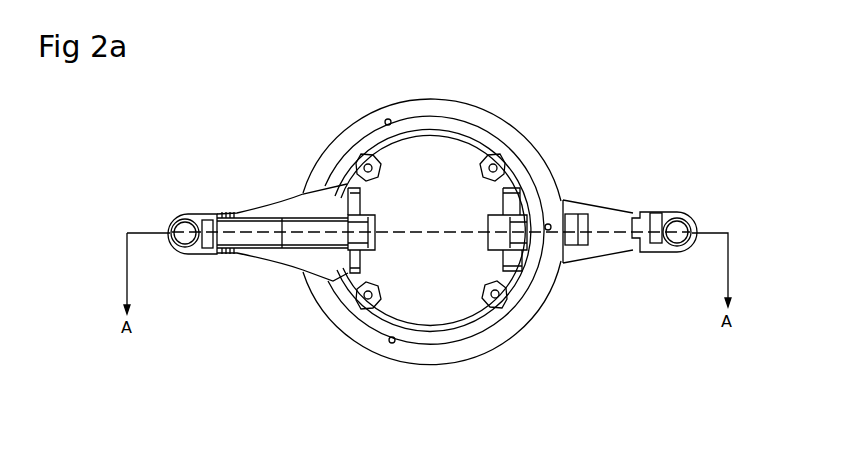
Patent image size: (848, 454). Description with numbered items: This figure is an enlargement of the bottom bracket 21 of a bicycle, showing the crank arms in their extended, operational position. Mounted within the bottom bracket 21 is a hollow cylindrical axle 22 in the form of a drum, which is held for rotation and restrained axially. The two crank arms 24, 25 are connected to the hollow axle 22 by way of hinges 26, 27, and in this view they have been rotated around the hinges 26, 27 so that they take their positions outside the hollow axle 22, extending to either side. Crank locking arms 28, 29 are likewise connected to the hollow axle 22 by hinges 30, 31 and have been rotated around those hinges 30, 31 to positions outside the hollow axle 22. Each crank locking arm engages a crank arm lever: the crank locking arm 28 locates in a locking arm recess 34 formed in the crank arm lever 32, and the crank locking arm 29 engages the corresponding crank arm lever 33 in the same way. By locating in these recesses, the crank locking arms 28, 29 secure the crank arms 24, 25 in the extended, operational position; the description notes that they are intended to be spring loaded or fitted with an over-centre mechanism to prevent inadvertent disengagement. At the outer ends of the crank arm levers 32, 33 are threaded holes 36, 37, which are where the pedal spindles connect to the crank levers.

The bottom bracket 21 is at (507, 120).
The hollow cylindrical axle 22 is at (372, 133).
The crank arm 24 is at (303, 207).
The crank arm 25 is at (585, 205).
The hinge 26 is at (348, 190).
The hinge 27 is at (515, 190).
The crank locking arm 28 is at (290, 242).
The crank locking arm 29 is at (572, 235).
The hinge 30 is at (352, 265).
The hinge 31 is at (513, 243).
The crank arm lever 32 is at (222, 216).
The crank arm lever 33 is at (668, 213).
The locking arm recess 34 is at (200, 251).
The threaded hole 36 is at (174, 245).
The threaded hole 37 is at (692, 227).